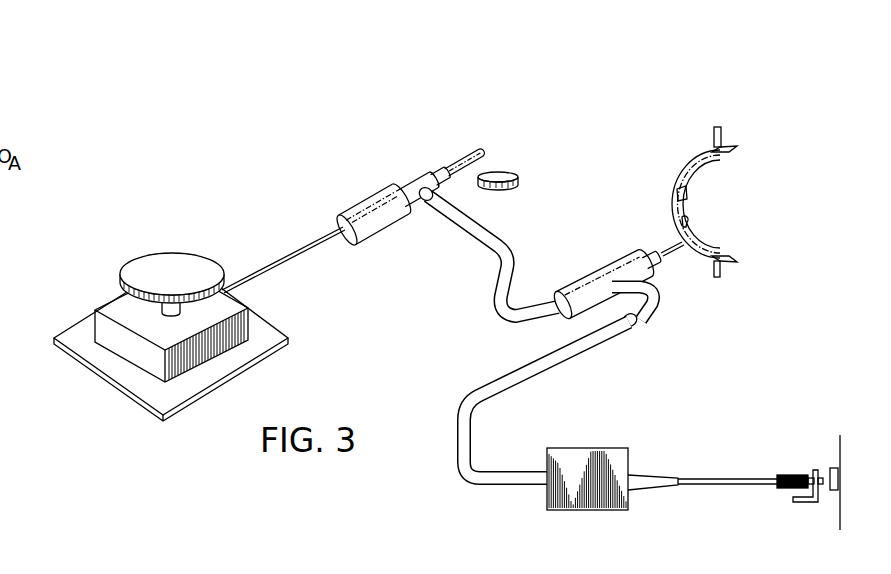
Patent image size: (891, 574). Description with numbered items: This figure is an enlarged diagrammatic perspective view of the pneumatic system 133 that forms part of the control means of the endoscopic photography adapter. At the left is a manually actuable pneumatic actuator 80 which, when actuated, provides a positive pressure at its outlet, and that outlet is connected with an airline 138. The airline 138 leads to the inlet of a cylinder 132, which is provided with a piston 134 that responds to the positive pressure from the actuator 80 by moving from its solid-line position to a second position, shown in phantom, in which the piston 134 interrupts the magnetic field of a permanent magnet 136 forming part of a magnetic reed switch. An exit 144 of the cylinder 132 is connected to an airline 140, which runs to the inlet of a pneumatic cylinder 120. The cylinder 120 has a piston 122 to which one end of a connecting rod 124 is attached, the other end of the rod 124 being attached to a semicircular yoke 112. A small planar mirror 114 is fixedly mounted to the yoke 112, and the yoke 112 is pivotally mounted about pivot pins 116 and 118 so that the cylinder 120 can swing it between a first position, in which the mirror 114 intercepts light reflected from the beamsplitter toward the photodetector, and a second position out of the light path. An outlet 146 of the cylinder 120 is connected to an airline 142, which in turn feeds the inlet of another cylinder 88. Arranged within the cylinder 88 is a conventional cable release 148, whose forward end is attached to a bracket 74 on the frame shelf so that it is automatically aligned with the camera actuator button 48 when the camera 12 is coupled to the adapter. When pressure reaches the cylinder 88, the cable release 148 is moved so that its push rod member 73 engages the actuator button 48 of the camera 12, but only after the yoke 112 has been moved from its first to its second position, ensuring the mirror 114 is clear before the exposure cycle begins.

The camera 12 is at (845, 459).
The camera actuator button 48 is at (833, 492).
The push rod member 73 is at (810, 475).
The bracket 74 is at (821, 470).
The pneumatic actuator 80 is at (120, 298).
The cylinder 88 is at (610, 448).
The semicircular yoke 112 is at (687, 154).
The planar mirror 114 is at (688, 195).
The pivot pin 116 is at (723, 133).
The pivot pin 118 is at (722, 272).
The pneumatic cylinder 120 is at (618, 254).
The piston 122 is at (660, 262).
The connecting rod 124 is at (668, 246).
The cylinder 132 is at (365, 202).
The pneumatic system 133 is at (437, 155).
The piston 134 is at (433, 172).
The permanent magnet 136 is at (477, 131).
The airline 138 is at (305, 258).
The airline 140 is at (508, 234).
The airline 142 is at (554, 360).
The exit 144 is at (428, 204).
The outlet 146 is at (648, 323).
The cable release 148 is at (698, 480).